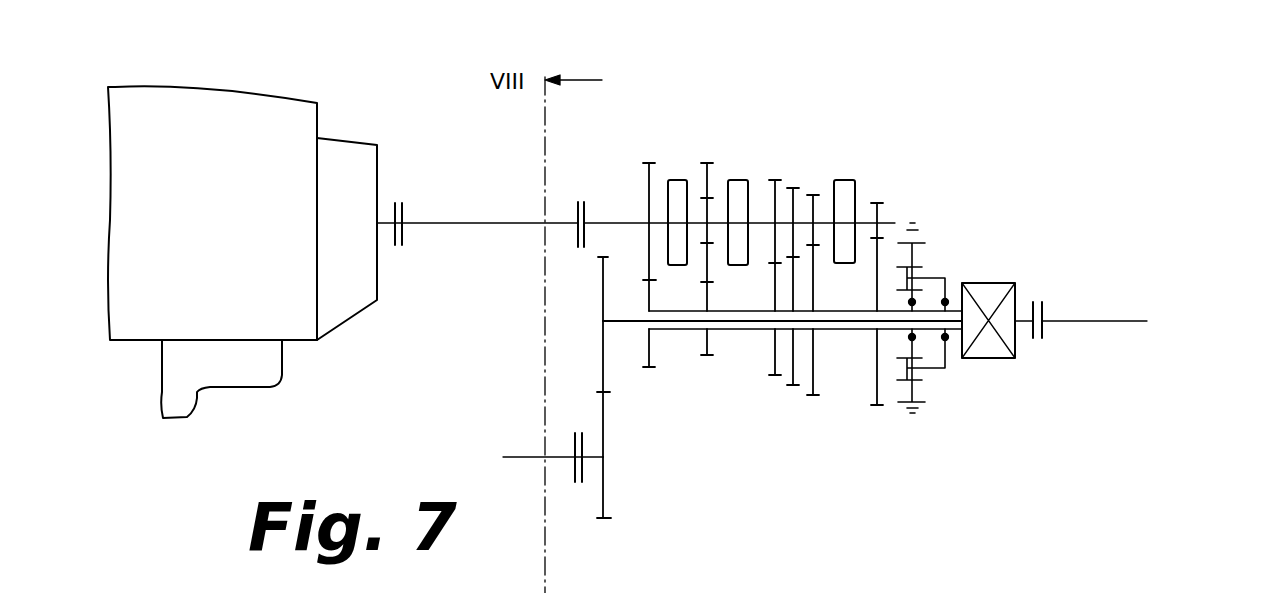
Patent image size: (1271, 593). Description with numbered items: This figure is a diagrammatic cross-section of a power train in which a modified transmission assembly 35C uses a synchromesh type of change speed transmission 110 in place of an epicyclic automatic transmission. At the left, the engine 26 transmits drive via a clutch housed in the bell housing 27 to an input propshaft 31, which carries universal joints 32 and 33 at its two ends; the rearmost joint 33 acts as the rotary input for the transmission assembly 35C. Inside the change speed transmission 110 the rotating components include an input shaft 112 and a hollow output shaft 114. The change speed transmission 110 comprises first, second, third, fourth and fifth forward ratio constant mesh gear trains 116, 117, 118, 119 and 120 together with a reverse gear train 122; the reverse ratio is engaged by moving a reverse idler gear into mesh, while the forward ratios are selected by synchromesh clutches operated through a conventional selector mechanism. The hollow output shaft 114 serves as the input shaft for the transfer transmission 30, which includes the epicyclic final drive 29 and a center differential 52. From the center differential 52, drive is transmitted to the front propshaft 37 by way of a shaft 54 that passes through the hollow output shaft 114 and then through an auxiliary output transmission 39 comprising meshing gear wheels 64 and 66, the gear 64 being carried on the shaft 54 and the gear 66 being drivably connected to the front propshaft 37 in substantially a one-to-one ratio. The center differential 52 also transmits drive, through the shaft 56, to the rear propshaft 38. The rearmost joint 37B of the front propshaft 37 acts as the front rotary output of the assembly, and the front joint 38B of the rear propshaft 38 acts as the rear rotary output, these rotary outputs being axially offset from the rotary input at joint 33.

The engine 26 is at (216, 238).
The bell housing 27 is at (333, 157).
The epicyclic final drive 29 is at (913, 221).
The transfer transmission 30 is at (955, 380).
The input propshaft 31 is at (485, 223).
The universal joint 32 is at (392, 237).
The universal joint 33 is at (578, 240).
The modified transmission assembly 35C is at (817, 430).
The front propshaft 37 is at (518, 457).
The universal joint 37B is at (572, 473).
The rear propshaft 38 is at (1102, 322).
The universal joint 38B is at (1045, 303).
The auxiliary output transmission 39 is at (603, 526).
The center differential 52 is at (983, 281).
The shaft 54 is at (758, 321).
The shaft 56 is at (1023, 322).
The gear 64 is at (603, 343).
The gear 66 is at (603, 490).
The synchromesh type change speed transmission 110 is at (743, 134).
The input shaft 112 is at (608, 223).
The hollow output shaft 114 is at (695, 330).
The first forward ratio constant mesh gear train 116 is at (875, 200).
The second forward ratio constant mesh gear train 117 is at (808, 193).
The third forward ratio constant mesh gear train 118 is at (787, 187).
The fourth forward ratio constant mesh gear train 119 is at (770, 180).
The fifth forward ratio constant mesh gear train 120 is at (645, 162).
The reverse gear train 122 is at (703, 162).